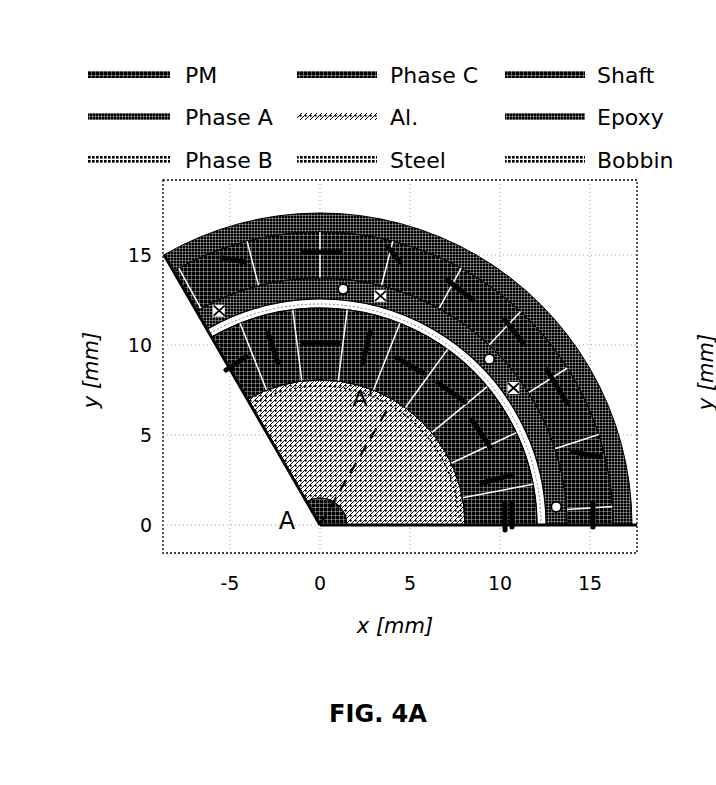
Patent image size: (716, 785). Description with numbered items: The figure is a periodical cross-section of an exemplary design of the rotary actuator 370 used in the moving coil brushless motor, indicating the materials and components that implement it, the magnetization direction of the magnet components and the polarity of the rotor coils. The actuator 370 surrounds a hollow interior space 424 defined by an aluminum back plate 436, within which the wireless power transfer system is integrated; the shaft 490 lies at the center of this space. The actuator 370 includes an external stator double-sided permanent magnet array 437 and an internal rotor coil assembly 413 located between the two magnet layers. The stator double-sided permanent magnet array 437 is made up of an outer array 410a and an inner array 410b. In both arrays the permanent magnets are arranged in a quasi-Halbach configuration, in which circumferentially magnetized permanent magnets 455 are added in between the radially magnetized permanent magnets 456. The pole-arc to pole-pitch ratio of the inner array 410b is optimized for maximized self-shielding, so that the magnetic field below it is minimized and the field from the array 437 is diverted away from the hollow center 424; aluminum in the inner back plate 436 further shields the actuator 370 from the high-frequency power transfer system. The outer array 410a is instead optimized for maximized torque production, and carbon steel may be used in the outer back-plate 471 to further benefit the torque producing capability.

The rotary actuator 370 is at (442, 433).
The outer array 410a is at (177, 279).
The inner array 410b is at (229, 375).
The internal rotor coil assembly 413 is at (199, 325).
The hollow interior space 424 is at (303, 448).
The aluminum back plate 436 is at (463, 515).
The stator double-sided permanent magnet array 437 is at (586, 550).
The circumferentially magnetized permanent magnets 455 is at (322, 240).
The radially magnetized permanent magnets 456 is at (413, 250).
The outer back-plate 471 is at (213, 233).
The shaft 490 is at (320, 525).